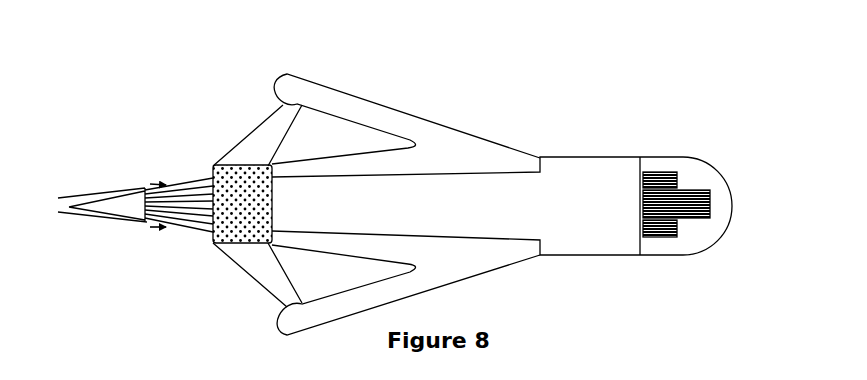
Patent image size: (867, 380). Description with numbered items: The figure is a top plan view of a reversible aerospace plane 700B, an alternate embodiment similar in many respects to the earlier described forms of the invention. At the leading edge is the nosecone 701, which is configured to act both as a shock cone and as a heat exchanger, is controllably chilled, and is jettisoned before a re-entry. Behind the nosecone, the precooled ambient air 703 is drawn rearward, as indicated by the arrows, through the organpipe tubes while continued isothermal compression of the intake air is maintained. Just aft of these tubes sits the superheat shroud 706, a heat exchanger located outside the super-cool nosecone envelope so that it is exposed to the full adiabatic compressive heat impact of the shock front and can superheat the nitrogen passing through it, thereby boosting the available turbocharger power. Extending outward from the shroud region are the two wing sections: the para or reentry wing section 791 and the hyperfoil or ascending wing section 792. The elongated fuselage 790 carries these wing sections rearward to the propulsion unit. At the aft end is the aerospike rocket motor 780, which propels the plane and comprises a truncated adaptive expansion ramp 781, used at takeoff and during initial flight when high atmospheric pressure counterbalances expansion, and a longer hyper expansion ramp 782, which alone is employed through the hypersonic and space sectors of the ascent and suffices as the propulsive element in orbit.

The reversible aerospace plane 700B is at (173, 75).
The nosecone 701 is at (110, 188).
The precooled ambient air 703 is at (140, 187).
The superheat shroud 706 is at (213, 243).
The body housing 790 is at (567, 152).
The para wing section 791 is at (408, 112).
The hyperfoil wing section 792 is at (258, 127).
The aerospike rocket motor 780 is at (657, 155).
The truncated adaptive expansion ramp 781 is at (690, 172).
The hyper expansion ramp 782 is at (710, 205).